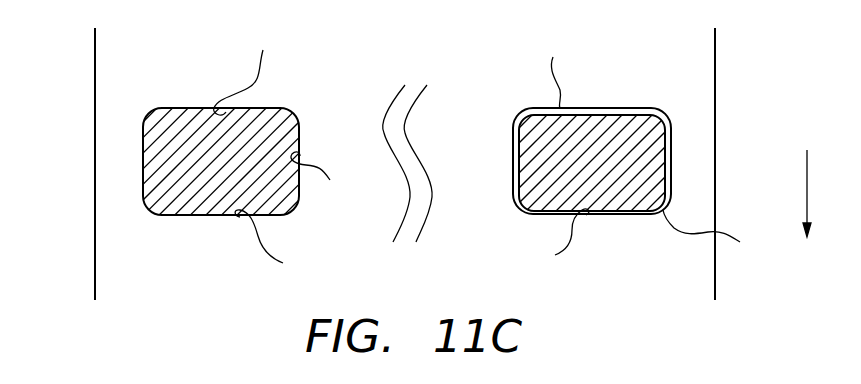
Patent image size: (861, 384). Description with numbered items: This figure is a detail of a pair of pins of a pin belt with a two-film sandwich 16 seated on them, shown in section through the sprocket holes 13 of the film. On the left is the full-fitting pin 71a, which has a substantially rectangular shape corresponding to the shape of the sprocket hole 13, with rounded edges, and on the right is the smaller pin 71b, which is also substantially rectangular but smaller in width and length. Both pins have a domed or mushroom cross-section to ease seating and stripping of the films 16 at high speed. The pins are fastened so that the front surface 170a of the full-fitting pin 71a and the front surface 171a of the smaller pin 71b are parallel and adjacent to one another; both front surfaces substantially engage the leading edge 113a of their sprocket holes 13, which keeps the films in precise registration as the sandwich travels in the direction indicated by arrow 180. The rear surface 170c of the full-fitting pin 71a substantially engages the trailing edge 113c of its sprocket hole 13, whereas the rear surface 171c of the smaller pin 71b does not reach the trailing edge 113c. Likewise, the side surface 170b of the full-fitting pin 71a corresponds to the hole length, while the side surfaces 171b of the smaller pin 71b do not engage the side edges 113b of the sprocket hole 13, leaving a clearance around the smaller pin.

The two-film sandwich film 16 is at (113, 146).
The sprocket hole 13 is at (601, 162).
The rear surface of full-fitting pin 170c is at (221, 167).
The front surface of full-fitting pin 170a is at (221, 193).
The side surface of full-fitting pin 170b is at (141, 168).
The trailing edge of sprocket hole 113c is at (397, 69).
The side edge of sprocket hole 113b is at (540, 206).
The leading edge of sprocket hole 113a is at (412, 245).
The rear surface of smaller pin 171c is at (601, 162).
The front surface of smaller pin 171a is at (601, 197).
The side surface of smaller pin 171b is at (665, 167).
The full-fitting pin 71a is at (164, 237).
The smaller pin 71b is at (680, 148).
The arrow indicating direction of travel 180 is at (807, 178).